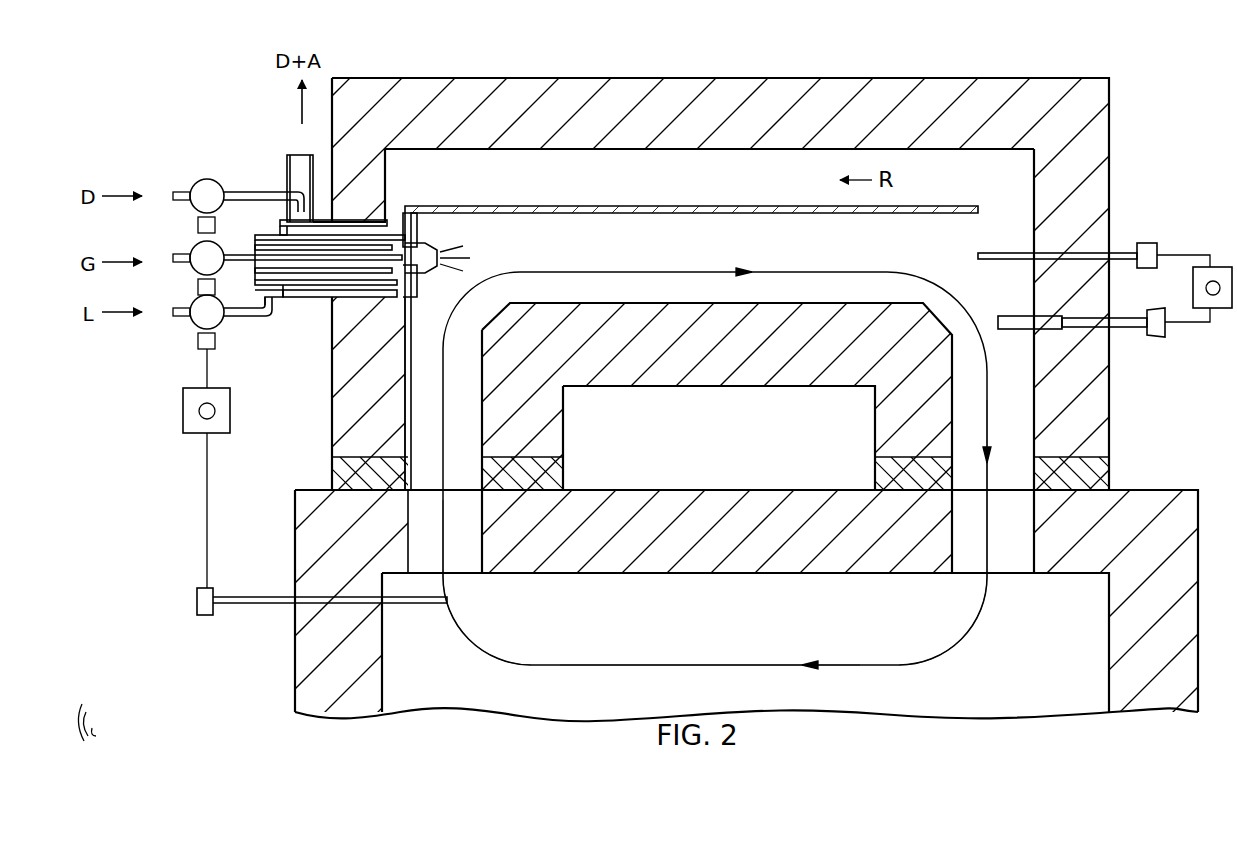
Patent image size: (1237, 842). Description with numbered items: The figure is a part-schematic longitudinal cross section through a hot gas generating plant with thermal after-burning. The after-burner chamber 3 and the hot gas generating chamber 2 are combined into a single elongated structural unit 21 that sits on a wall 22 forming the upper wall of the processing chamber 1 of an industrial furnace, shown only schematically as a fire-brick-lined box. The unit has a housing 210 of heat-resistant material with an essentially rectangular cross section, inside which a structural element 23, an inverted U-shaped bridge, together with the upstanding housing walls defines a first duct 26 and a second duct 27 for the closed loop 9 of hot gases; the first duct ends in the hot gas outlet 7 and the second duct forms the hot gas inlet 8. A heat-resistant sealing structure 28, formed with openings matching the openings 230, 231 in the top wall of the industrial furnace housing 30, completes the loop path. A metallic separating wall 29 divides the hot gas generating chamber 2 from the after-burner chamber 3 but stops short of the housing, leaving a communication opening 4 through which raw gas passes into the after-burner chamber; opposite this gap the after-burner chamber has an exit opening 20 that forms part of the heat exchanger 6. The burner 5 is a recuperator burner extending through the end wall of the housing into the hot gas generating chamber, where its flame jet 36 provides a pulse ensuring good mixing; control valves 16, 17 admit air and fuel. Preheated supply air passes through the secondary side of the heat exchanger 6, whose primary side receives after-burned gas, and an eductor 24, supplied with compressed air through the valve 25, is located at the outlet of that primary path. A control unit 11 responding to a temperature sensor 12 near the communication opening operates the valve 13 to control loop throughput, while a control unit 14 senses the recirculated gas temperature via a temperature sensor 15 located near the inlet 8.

The processing chamber 1 is at (953, 697).
The hot gas generating chamber 2 is at (729, 252).
The after-burner chamber 3 is at (729, 184).
The communication opening 4 is at (993, 207).
The burner 5 is at (317, 268).
The heat exchanger 6 is at (276, 282).
The hot gas outlet 7 is at (1013, 493).
The hot gas inlet 8 is at (465, 562).
The closed loop 9 is at (663, 665).
The control unit 11 is at (1218, 298).
The temperature sensor 12 is at (1003, 252).
The valve 13 is at (1002, 320).
The control unit 14 is at (190, 430).
The temperature sensor 15 is at (428, 607).
The control valve 16 is at (194, 248).
The control valve 17 is at (193, 306).
The exit opening 20 is at (361, 214).
The structural unit 21 is at (1130, 127).
The wall 22 is at (780, 502).
The structural element 23 is at (716, 362).
The eductor 24 is at (297, 207).
The valve 25 is at (206, 181).
The first duct 26 is at (1018, 380).
The second duct 27 is at (410, 385).
The heat-resistant sealing structure 28 is at (336, 475).
The metallic separating wall 29 is at (566, 207).
The industrial furnace housing 30 is at (1187, 570).
The flame jet 36 is at (480, 253).
The housing 210 is at (686, 92).
The opening 230 is at (420, 539).
The opening 231 is at (997, 563).